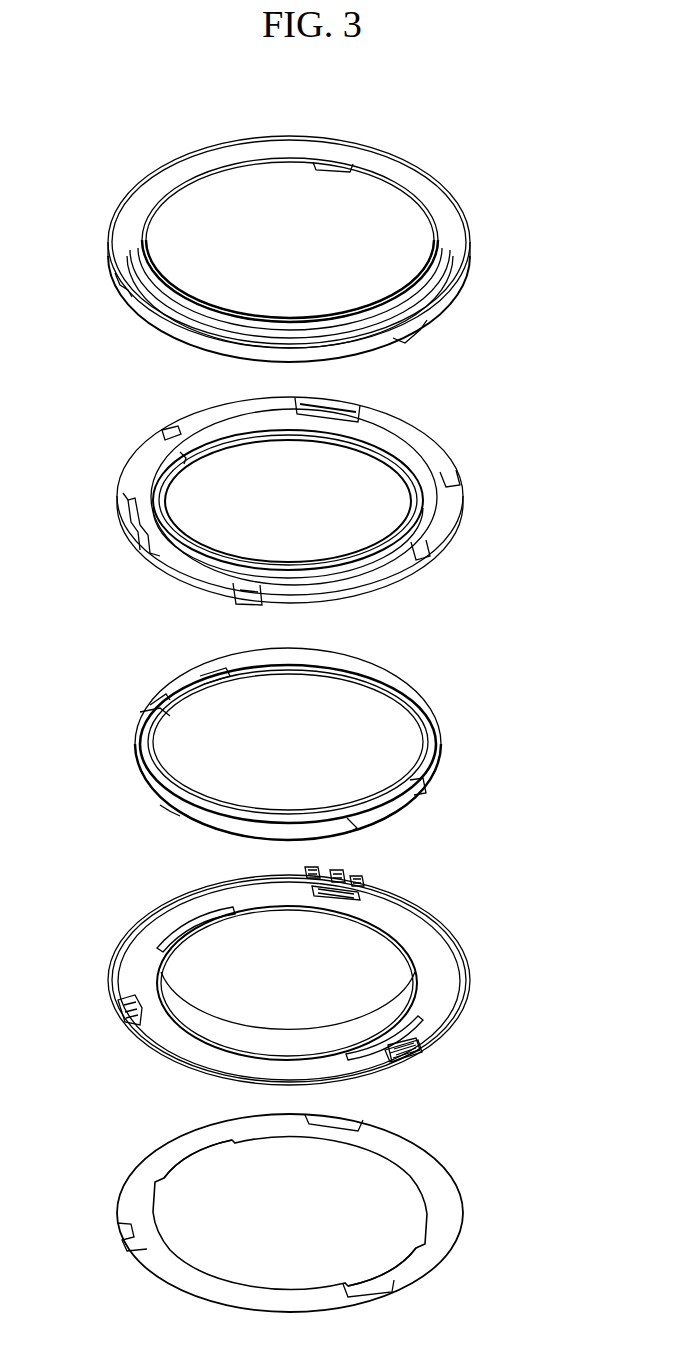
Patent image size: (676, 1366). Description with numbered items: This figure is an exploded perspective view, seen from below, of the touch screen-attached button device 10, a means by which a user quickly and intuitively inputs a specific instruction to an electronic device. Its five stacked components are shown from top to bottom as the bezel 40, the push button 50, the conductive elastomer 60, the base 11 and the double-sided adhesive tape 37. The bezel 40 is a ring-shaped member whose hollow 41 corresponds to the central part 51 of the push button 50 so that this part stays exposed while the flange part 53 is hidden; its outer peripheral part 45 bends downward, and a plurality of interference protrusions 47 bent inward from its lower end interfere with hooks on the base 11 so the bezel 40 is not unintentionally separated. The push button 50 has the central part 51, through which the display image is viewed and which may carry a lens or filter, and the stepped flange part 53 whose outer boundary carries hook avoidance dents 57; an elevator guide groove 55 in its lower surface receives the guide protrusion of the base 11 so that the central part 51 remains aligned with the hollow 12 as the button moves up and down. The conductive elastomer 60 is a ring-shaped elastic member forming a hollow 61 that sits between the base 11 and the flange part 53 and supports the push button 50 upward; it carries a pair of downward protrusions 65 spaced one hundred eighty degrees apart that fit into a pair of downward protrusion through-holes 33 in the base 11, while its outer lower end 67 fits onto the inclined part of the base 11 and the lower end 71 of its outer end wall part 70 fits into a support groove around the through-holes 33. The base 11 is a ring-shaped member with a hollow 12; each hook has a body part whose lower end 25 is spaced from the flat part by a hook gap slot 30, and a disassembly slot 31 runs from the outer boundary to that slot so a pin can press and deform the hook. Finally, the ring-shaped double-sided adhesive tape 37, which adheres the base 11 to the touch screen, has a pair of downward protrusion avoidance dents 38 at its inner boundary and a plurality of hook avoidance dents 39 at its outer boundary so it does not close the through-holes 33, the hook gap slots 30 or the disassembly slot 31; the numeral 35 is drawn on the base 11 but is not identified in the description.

The touch screen-attached button device 10 is at (314, 227).
The base 11 is at (308, 985).
The hollow 12 is at (247, 982).
The lower end of the body part 25 is at (126, 1022).
The hook gap slot 30 is at (326, 897).
The disassembly slot 31 is at (338, 872).
The downward protrusion through-hole 33 is at (200, 920).
The rim 35 is at (440, 976).
The double-sided adhesive tape 37 is at (317, 1217).
The downward protrusion avoidance dent 38 is at (183, 1150).
The hook avoidance dent 39 is at (326, 1131).
The bezel 40 is at (342, 238).
The hollow 41 is at (387, 251).
The outer peripheral part 45 is at (416, 180).
The interference protrusion 47 is at (330, 167).
The push button 50 is at (284, 487).
The central part 51 is at (345, 470).
The flange part 53 is at (440, 497).
The elevator guide groove 55 is at (183, 458).
The hook avoidance dent 57 is at (345, 402).
The conductive elastomer 60 is at (293, 732).
The hollow 61 is at (338, 749).
The downward protrusion 65 is at (158, 701).
The outer lower end 67 is at (170, 809).
The outer end wall part 70 is at (164, 692).
The lower end of the outer end wall part 71 is at (213, 677).